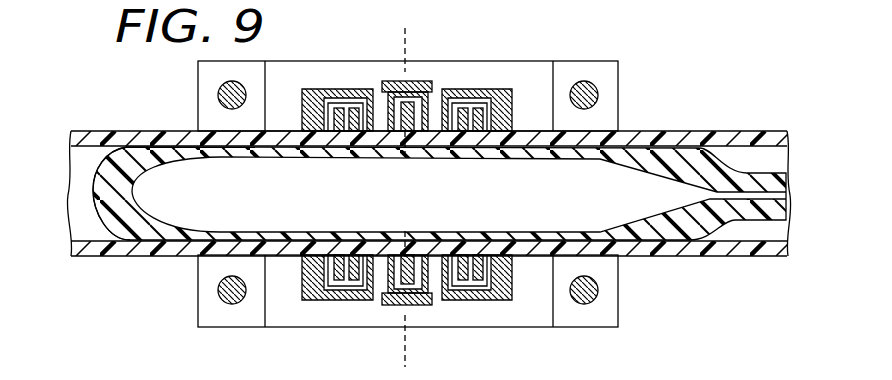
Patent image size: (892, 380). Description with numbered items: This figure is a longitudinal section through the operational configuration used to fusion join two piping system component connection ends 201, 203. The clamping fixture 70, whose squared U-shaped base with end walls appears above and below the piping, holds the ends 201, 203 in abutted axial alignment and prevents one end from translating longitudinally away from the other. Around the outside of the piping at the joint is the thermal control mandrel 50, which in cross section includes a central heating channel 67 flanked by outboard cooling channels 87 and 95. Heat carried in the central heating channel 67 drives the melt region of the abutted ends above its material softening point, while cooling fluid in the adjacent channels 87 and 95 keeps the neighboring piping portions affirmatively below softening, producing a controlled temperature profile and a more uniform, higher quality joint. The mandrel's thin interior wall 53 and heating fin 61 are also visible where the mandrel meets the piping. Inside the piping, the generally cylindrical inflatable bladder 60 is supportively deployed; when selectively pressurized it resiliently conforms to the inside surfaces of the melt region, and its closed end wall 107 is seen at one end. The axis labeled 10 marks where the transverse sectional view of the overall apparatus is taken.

The section axis 10— 10 is at (405, 28).
The thermal control mandrel 50 is at (379, 283).
The thin interior wall 53 is at (410, 108).
The inflatable bladder 60 is at (294, 162).
The heating fin 61 is at (411, 242).
The central heating channel 67 is at (399, 93).
The clamping fixture 70 is at (629, 126).
The cooling channel 87 is at (347, 100).
The cooling channel 95 is at (478, 100).
The end wall 107 is at (130, 228).
The piping system component connection end 201 is at (119, 134).
The piping system component connection end 203 is at (724, 133).